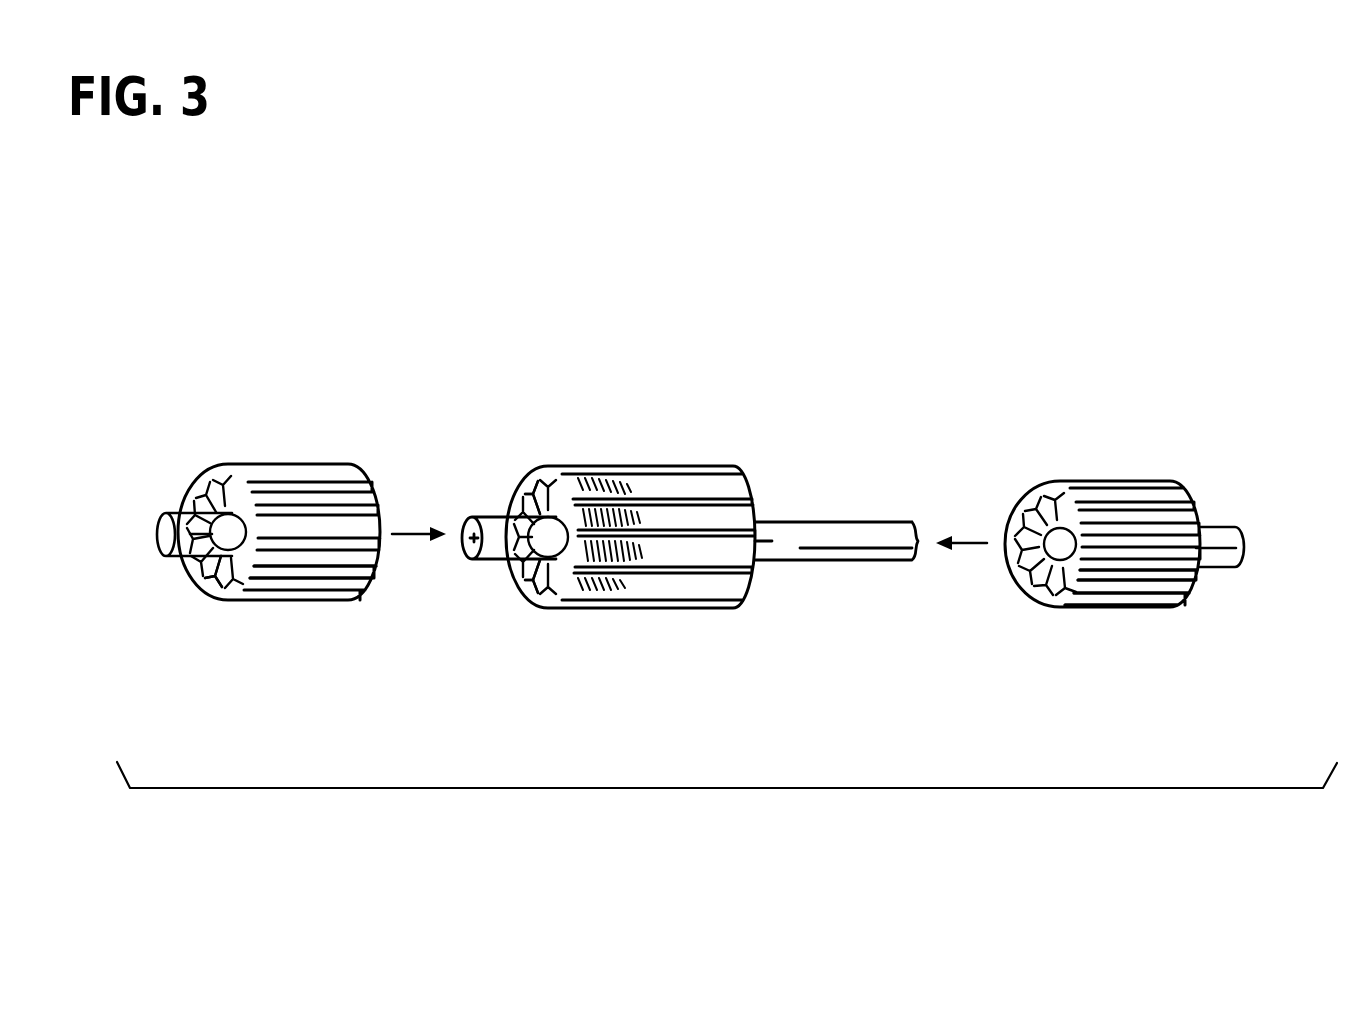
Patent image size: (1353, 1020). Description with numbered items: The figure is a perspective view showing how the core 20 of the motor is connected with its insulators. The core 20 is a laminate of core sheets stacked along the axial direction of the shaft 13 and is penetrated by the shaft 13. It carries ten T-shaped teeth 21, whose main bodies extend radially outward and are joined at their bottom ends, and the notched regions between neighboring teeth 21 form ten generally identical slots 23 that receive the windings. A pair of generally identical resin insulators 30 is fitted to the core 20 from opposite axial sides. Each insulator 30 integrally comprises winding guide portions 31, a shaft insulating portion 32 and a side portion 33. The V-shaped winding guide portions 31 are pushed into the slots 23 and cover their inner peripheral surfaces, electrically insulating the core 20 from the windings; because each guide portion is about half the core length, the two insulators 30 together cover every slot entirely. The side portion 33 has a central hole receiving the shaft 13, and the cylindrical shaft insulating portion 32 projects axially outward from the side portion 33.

The shaft 13 is at (802, 548).
The core 20 is at (660, 463).
The teeth 21 is at (522, 480).
The slots 23 is at (554, 605).
The insulator 30 is at (277, 452).
The winding guide portions 31 is at (263, 594).
The shaft insulating portion 32 is at (185, 572).
The side portion 33 is at (206, 592).